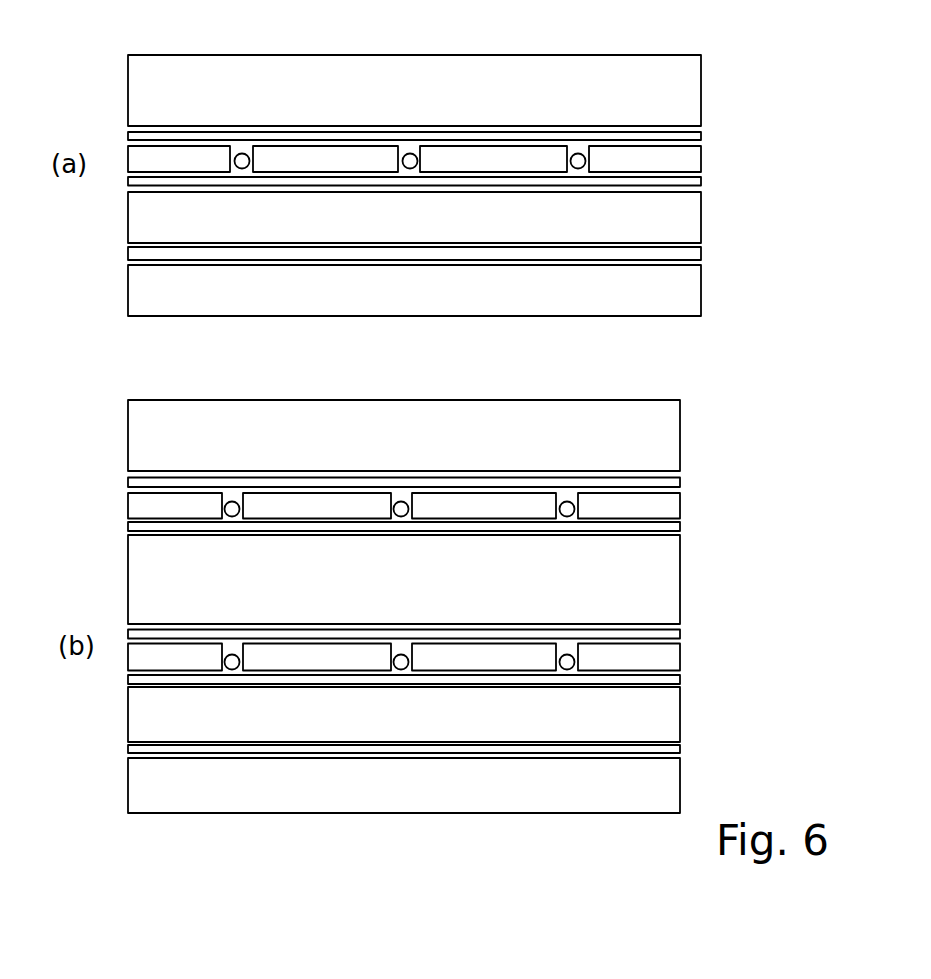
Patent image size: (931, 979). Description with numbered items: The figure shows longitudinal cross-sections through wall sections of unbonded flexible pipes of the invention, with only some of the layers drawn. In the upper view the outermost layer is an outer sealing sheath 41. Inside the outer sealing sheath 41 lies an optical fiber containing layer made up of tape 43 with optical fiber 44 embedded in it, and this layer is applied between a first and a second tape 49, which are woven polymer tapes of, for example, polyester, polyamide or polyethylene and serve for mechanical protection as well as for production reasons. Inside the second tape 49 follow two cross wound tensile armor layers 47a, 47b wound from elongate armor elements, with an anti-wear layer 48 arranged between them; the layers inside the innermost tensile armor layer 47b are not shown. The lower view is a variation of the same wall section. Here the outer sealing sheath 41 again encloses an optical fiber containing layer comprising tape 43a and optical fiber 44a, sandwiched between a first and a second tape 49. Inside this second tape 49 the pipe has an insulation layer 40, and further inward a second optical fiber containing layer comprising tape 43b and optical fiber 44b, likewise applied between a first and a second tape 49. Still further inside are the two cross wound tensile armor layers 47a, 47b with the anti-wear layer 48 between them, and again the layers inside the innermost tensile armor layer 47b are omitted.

The insulation layer 40 is at (142, 578).
The outer sealing sheath 41 is at (552, 83).
The tape 43 is at (692, 162).
The tape 43a is at (665, 503).
The tape 43b is at (667, 655).
The optical fiber 44 is at (578, 150).
The optical fiber 44a is at (565, 500).
The optical fiber 44b is at (572, 668).
The cross wound tensile armor layer 47a is at (693, 295).
The cross wound tensile armor layer 47b is at (692, 222).
The anti-wear layer 48 is at (693, 255).
The tape 49 is at (477, 137).